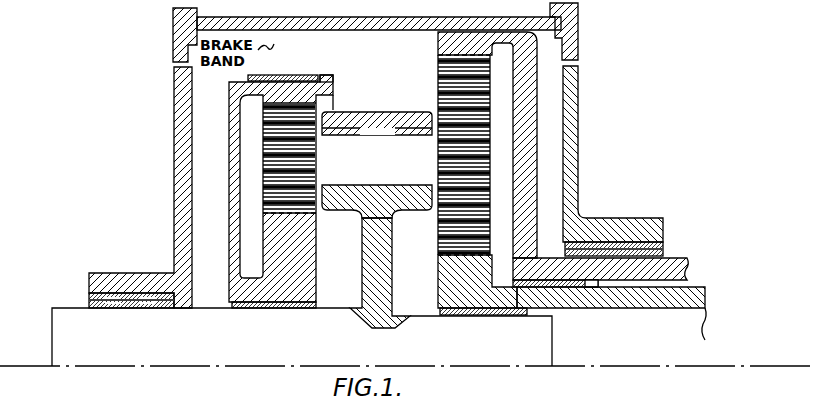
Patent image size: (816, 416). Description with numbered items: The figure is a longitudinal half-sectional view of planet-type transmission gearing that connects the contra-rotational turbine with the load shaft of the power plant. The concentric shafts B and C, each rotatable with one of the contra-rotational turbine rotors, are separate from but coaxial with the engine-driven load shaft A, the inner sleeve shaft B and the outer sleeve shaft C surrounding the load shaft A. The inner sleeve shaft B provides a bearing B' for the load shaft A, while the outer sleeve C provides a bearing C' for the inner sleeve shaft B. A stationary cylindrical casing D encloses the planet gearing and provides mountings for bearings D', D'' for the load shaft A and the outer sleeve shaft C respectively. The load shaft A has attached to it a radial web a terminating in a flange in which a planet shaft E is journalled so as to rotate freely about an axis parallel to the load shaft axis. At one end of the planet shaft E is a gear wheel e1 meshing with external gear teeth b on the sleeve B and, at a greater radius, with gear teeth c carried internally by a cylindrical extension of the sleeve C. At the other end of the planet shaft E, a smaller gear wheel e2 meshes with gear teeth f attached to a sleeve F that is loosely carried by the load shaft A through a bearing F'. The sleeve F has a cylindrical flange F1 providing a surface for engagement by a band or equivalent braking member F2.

The load shaft A is at (537, 357).
The inner sleeve shaft B is at (623, 310).
The bearing B' is at (483, 328).
The outer sleeve shaft C is at (613, 258).
The bearing C' is at (564, 308).
The cylindrical casing D is at (376, 187).
The bearing D' is at (131, 319).
The bearing D'' is at (640, 231).
The planet shaft E is at (372, 172).
The sleeve F is at (281, 210).
The cylindrical flange F1 is at (330, 73).
The braking member F2 is at (279, 77).
The bearing F' is at (274, 323).
The radial web a is at (366, 266).
The external gear teeth b is at (441, 268).
The internal gear teeth c is at (498, 48).
The gear wheel e1 is at (458, 93).
The smaller gear wheel e2 is at (267, 187).
The gear teeth f is at (315, 220).